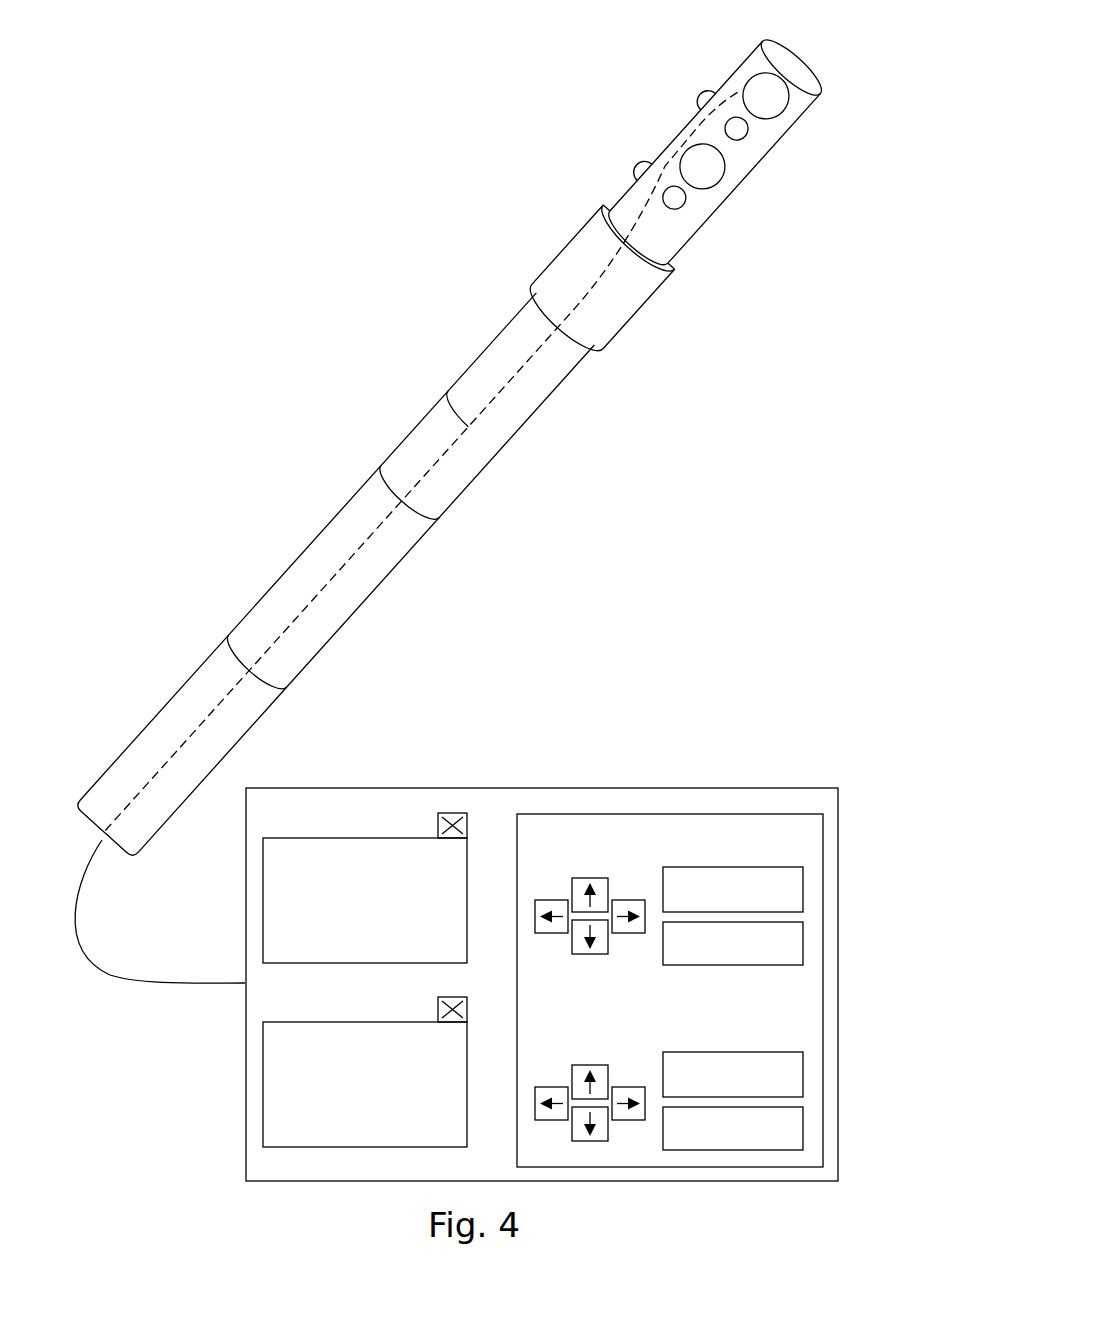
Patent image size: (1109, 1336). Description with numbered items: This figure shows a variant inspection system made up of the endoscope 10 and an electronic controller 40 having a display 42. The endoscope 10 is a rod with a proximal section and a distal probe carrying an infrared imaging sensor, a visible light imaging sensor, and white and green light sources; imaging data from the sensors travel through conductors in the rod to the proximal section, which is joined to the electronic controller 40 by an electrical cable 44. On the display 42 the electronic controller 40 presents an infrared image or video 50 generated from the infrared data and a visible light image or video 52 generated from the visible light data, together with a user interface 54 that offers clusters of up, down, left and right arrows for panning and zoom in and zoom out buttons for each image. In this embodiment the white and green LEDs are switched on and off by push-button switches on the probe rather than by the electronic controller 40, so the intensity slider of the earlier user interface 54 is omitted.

The endoscope 10 is at (547, 492).
The electronic controller 40 is at (608, 752).
The display 42 is at (277, 1167).
The electrical cable 44 is at (188, 980).
The infrared image or video 50 is at (351, 945).
The visible light image or video 52 is at (351, 1128).
The user interface 54 is at (688, 812).